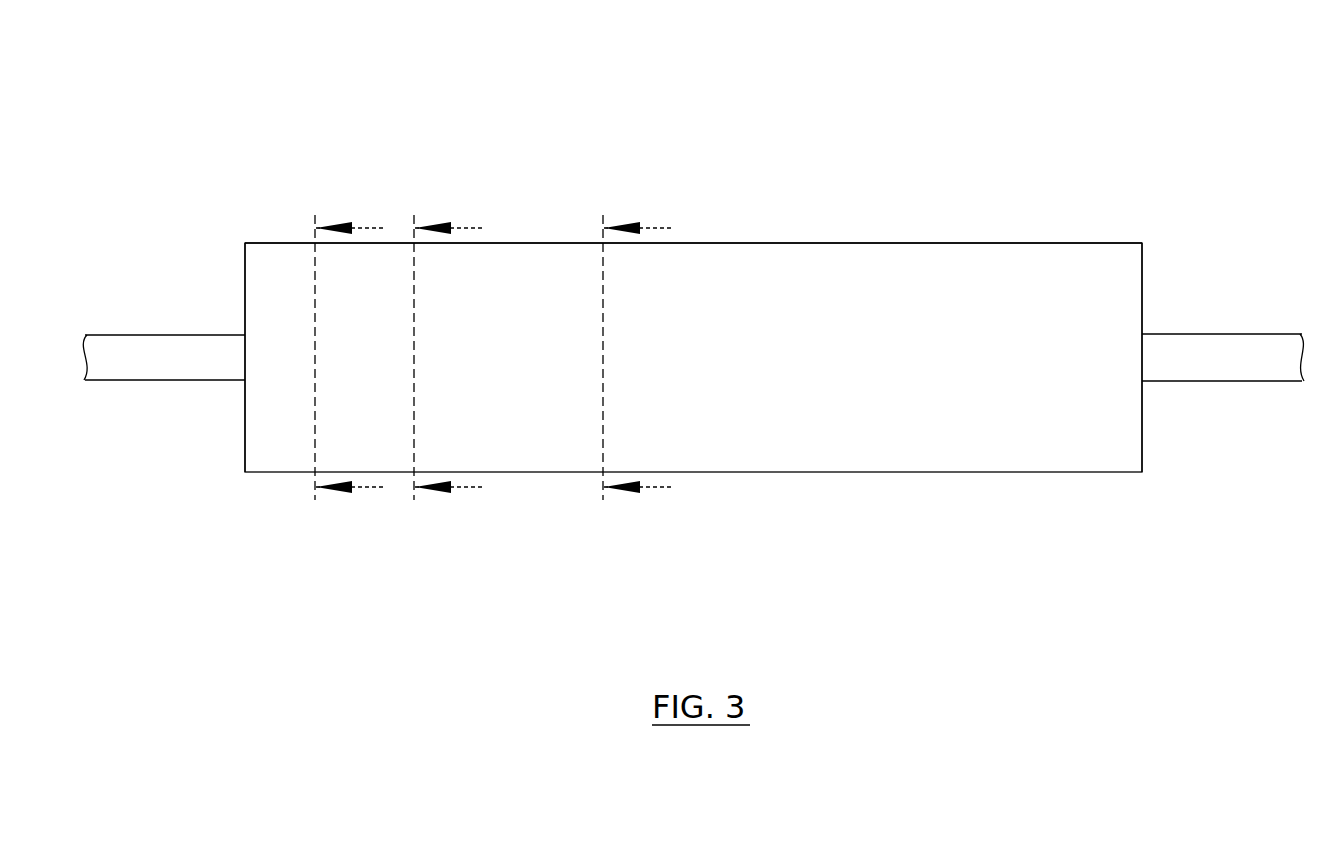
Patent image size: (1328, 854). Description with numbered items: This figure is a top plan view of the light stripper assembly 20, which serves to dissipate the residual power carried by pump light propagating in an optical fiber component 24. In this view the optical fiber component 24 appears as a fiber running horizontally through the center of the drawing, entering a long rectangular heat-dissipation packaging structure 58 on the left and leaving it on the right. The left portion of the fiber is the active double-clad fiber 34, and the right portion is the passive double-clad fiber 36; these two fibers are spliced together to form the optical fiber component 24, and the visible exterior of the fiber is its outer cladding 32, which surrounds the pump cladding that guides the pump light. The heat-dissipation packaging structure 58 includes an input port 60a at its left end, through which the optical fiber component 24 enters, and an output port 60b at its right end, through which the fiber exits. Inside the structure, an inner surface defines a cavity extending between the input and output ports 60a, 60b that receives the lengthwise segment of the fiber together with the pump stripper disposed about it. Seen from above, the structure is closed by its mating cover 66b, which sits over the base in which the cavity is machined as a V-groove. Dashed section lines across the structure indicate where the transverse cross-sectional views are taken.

The light stripper assembly 20 is at (1006, 50).
The optical fiber component 24 is at (1225, 402).
The outer cladding 32 is at (150, 347).
The active double-clad fiber 34 is at (117, 400).
The passive double-clad fiber 36 is at (1271, 324).
The heat-dissipation packaging structure 58 is at (1174, 260).
The input port 60a is at (226, 435).
The output port 60b is at (1168, 460).
The mating cover 66b is at (809, 261).